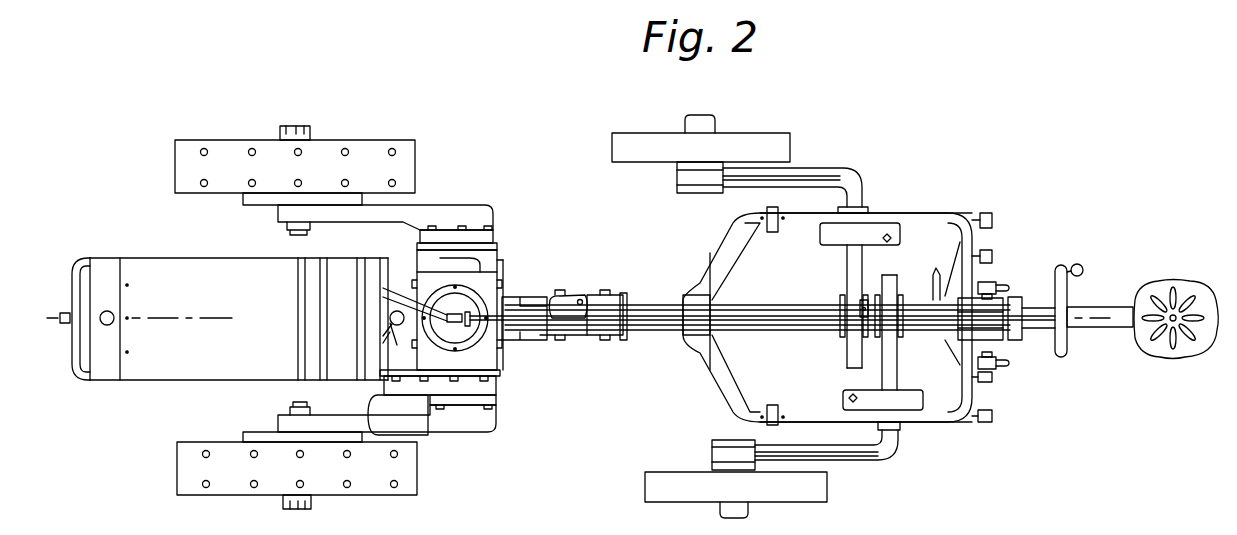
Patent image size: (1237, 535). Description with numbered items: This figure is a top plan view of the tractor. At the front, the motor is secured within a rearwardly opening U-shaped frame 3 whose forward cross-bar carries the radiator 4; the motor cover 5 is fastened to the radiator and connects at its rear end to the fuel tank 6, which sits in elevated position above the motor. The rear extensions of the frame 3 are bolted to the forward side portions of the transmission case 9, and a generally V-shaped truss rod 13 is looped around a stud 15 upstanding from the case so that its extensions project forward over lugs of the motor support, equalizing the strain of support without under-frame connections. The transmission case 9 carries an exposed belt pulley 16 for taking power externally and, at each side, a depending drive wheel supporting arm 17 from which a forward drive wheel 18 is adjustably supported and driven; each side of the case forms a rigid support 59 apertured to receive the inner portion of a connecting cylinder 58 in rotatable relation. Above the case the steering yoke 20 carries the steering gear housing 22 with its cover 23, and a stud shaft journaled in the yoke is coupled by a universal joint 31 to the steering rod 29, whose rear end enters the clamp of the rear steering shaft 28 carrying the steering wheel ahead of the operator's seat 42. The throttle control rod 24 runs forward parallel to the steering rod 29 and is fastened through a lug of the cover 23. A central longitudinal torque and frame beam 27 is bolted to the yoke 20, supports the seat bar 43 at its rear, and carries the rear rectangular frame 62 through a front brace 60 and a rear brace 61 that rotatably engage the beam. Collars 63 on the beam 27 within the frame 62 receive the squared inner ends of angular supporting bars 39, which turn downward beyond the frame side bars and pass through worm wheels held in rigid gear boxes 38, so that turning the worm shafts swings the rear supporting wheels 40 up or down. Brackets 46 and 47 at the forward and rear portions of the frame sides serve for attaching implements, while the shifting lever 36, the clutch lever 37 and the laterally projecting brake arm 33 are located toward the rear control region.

The U-shaped frame 3 is at (72, 350).
The radiator 4 is at (112, 362).
The motor cover 5 is at (200, 358).
The fuel tank 6 is at (342, 360).
The transmission case 9 is at (500, 359).
The truss rod 13 is at (393, 327).
The stud 15 is at (397, 311).
The belt pulley 16 is at (413, 420).
The drive wheel supporting arm 17 is at (471, 205).
The forward drive wheel 18 is at (417, 157).
The steering yoke 20 is at (597, 340).
The steering gear housing 22 is at (455, 272).
The cover 23 is at (443, 330).
The throttle control rod 24 is at (505, 298).
The torque and frame beam 27 is at (655, 300).
The rear steering shaft 28 is at (1035, 306).
The steering rod 29 is at (795, 305).
The universal joint 31 is at (575, 297).
The laterally projecting arm 33 is at (933, 292).
The shifting lever 36 is at (1010, 364).
The lever 37 is at (1000, 281).
The gear box 38 is at (820, 238).
The angular supporting bar 39 is at (845, 265).
The rear supporting wheel 40 is at (790, 148).
The operator's seat 42 is at (1170, 280).
The seat bar 43 is at (1100, 307).
The bracket 46 is at (767, 228).
The bracket 47 is at (992, 219).
The connecting cylinder 58 is at (493, 236).
The rigid support 59 is at (500, 385).
The front brace 60 is at (700, 340).
The rear brace 61 is at (955, 352).
The rear rectangular frame 62 is at (917, 213).
The collar 63 is at (865, 295).